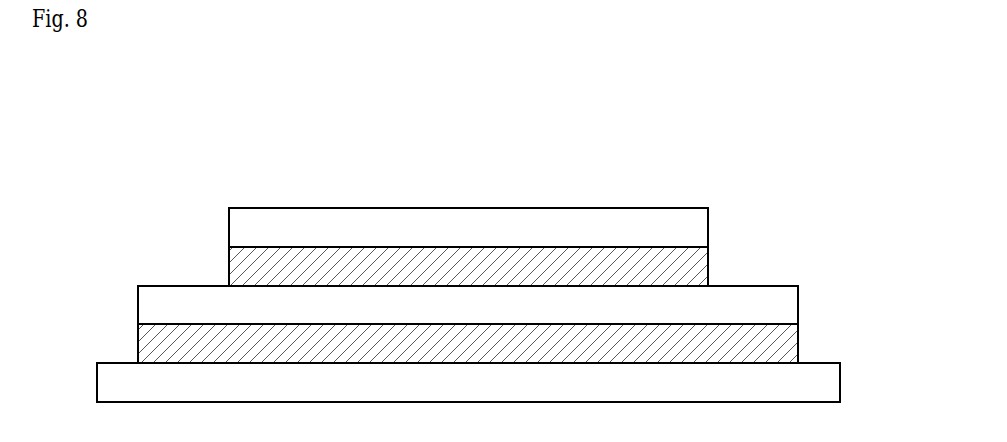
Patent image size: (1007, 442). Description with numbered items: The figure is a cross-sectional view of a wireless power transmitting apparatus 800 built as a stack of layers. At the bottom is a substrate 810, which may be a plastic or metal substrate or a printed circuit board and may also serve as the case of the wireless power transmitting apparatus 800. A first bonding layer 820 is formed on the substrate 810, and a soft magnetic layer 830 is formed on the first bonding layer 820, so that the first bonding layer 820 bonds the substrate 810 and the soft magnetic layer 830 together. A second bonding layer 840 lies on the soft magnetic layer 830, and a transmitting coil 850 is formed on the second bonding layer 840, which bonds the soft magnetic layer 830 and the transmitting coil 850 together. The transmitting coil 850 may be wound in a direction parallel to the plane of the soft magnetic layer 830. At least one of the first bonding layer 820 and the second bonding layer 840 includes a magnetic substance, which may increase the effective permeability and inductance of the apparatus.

The wireless power transmitting apparatus 800 is at (631, 134).
The substrate 810 is at (827, 380).
The first bonding layer 820 is at (787, 343).
The soft magnetic layer 830 is at (787, 302).
The second bonding layer 840 is at (697, 268).
The transmitting coil 850 is at (696, 223).